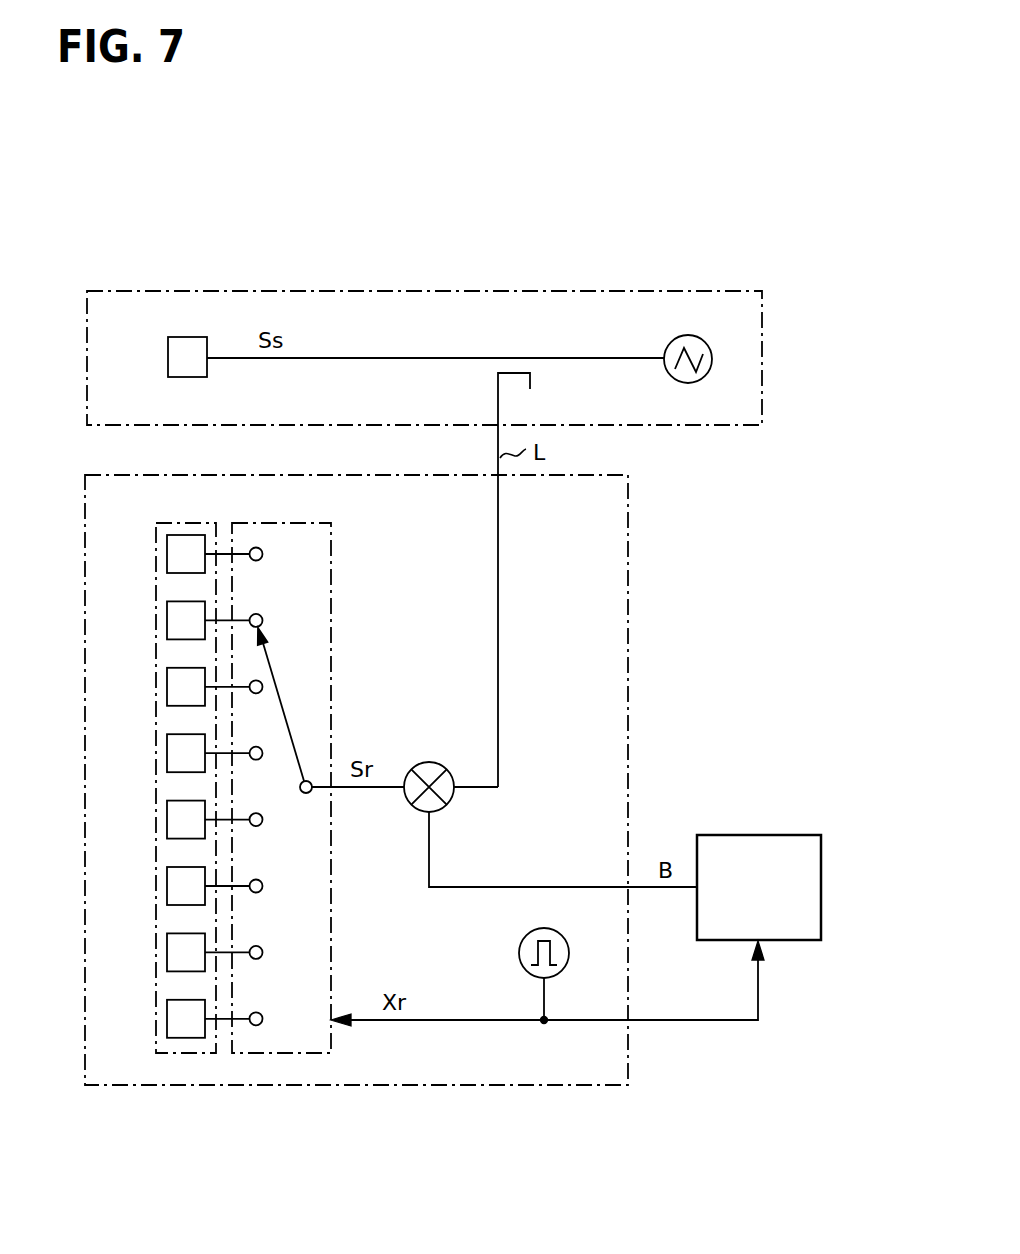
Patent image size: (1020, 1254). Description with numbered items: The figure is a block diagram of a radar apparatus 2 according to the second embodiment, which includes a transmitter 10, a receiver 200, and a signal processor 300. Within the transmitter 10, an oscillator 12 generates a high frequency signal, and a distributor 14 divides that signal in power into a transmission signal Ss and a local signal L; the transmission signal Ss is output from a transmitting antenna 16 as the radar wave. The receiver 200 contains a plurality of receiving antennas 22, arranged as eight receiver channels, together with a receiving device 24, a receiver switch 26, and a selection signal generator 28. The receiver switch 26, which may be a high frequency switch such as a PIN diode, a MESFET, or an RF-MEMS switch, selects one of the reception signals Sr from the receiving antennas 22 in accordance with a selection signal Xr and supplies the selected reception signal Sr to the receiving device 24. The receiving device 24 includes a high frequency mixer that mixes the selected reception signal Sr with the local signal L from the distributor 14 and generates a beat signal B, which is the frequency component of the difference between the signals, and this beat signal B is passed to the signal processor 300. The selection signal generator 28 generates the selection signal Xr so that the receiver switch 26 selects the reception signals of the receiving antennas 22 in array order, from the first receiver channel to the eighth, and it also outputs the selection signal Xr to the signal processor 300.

The radar apparatus 2 is at (286, 198).
The transmitter 10 is at (564, 292).
The oscillator 12 is at (667, 345).
The distributor 14 is at (490, 370).
The transmitting antenna 16 is at (168, 340).
The receiver 200 is at (632, 522).
The receiving antennas 22 is at (160, 522).
The receiving device 24 is at (418, 765).
The receiver switch 26 is at (335, 553).
The selection signal generator 28 is at (519, 953).
The signal processor 300 is at (797, 834).